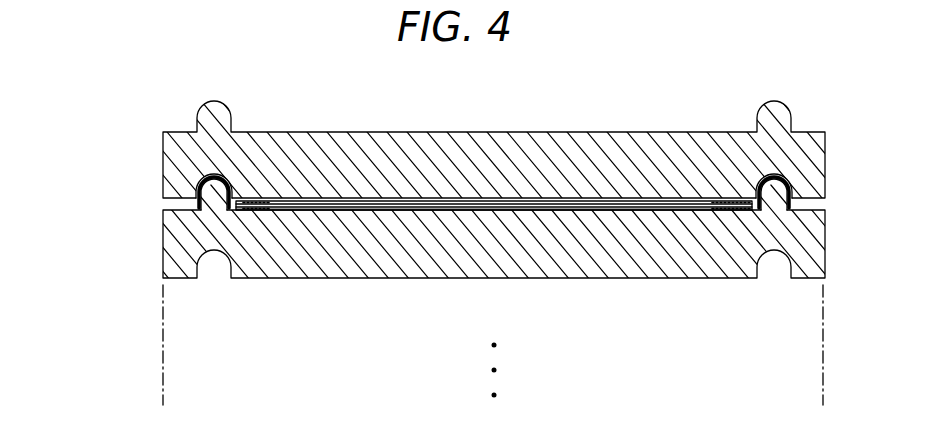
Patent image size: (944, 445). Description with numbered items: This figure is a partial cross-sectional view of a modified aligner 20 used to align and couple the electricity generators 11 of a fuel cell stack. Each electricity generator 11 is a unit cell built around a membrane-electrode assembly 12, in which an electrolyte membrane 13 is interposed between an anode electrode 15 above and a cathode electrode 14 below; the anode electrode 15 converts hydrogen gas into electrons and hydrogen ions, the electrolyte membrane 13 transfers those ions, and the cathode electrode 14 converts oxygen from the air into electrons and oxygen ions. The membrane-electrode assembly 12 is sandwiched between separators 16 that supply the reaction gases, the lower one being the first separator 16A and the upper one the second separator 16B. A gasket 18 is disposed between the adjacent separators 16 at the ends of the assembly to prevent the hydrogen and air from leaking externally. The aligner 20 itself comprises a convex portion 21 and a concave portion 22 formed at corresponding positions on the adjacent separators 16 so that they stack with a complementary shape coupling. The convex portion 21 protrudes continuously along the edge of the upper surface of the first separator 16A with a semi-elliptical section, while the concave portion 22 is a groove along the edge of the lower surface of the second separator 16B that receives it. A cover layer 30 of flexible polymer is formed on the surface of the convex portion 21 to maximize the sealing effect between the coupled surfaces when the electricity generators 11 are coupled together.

The electricity generator 11 is at (483, 243).
The membrane-electrode assembly 12 is at (494, 291).
The electrolyte membrane 13 is at (404, 205).
The cathode electrode 14 is at (444, 208).
The anode electrode 15 is at (368, 202).
The separator 16 is at (480, 243).
The first separator 16A is at (641, 255).
The second separator 16B is at (571, 184).
The gasket 18 is at (255, 211).
The aligner 20 is at (422, 185).
The convex portion 21 is at (200, 206).
The concave portion 22 is at (197, 179).
The cover layer 30 is at (237, 185).